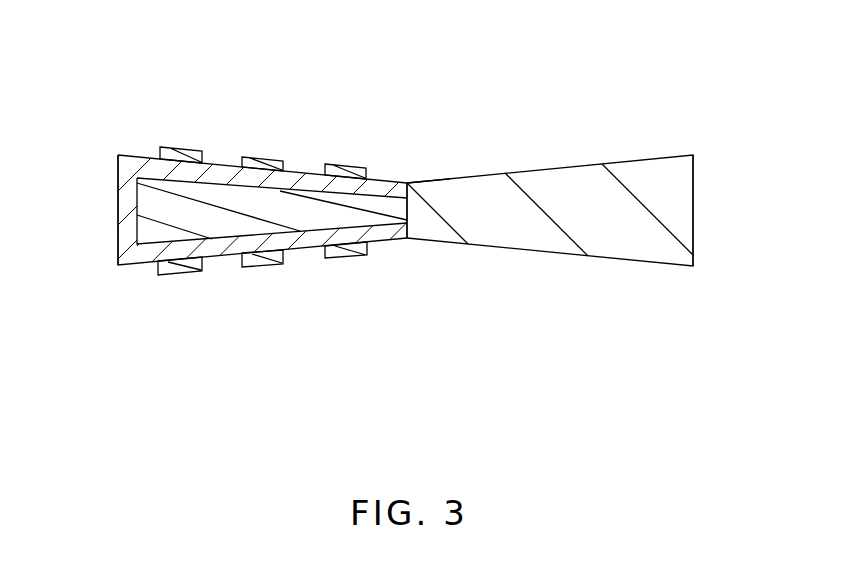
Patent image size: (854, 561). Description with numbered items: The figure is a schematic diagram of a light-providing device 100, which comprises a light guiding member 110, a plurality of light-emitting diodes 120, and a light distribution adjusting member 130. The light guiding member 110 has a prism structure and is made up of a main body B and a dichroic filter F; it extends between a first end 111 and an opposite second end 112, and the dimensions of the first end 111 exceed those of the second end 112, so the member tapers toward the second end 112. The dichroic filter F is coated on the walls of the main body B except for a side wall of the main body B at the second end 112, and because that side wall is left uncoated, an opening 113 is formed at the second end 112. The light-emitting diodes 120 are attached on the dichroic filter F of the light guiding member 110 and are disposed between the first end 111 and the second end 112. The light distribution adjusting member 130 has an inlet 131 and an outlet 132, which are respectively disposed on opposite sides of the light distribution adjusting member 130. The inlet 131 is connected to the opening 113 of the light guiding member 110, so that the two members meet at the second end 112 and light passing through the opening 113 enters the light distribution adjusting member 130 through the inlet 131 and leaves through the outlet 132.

The light-providing device 100 is at (78, 38).
The light guiding member 110 is at (110, 146).
The first end 111 is at (118, 213).
The second end 112 is at (409, 184).
The opening 113 is at (405, 198).
The light-emitting diodes 120 is at (265, 158).
The light distribution adjusting member 130 is at (575, 205).
The inlet 131 is at (409, 218).
The outlet 132 is at (697, 206).
The dichroic filter F is at (143, 165).
The main body B is at (302, 208).